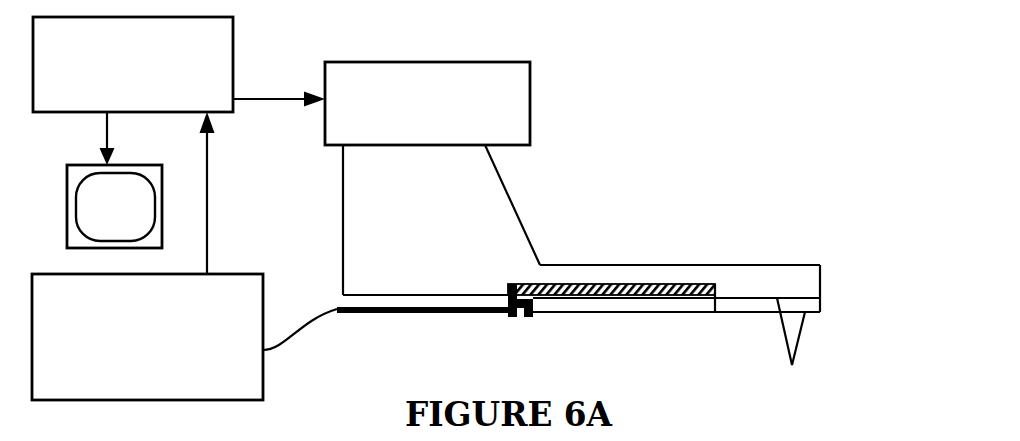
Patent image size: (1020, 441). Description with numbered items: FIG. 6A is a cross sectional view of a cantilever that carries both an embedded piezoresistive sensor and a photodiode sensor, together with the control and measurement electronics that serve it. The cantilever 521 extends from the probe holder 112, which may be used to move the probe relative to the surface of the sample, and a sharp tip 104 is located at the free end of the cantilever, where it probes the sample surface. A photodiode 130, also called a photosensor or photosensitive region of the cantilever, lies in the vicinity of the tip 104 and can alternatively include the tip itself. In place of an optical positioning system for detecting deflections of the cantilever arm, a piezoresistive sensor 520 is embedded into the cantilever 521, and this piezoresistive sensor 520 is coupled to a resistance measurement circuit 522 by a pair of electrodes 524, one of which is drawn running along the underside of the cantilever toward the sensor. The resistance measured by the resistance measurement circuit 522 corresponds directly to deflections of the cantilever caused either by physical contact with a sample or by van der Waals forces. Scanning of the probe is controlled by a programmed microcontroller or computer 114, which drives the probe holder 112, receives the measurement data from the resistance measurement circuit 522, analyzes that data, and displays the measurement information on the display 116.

The programmed microcontroller or computer 114 is at (143, 98).
The display 116 is at (122, 165).
The probe holder 112 is at (517, 110).
The cantilever 521 is at (405, 234).
The piezoresistive sensor 520 is at (647, 284).
The resistance measurement circuit 522 is at (235, 274).
The electrodes 524 is at (417, 318).
The photodiode 130 is at (776, 305).
The tip 104 is at (805, 336).